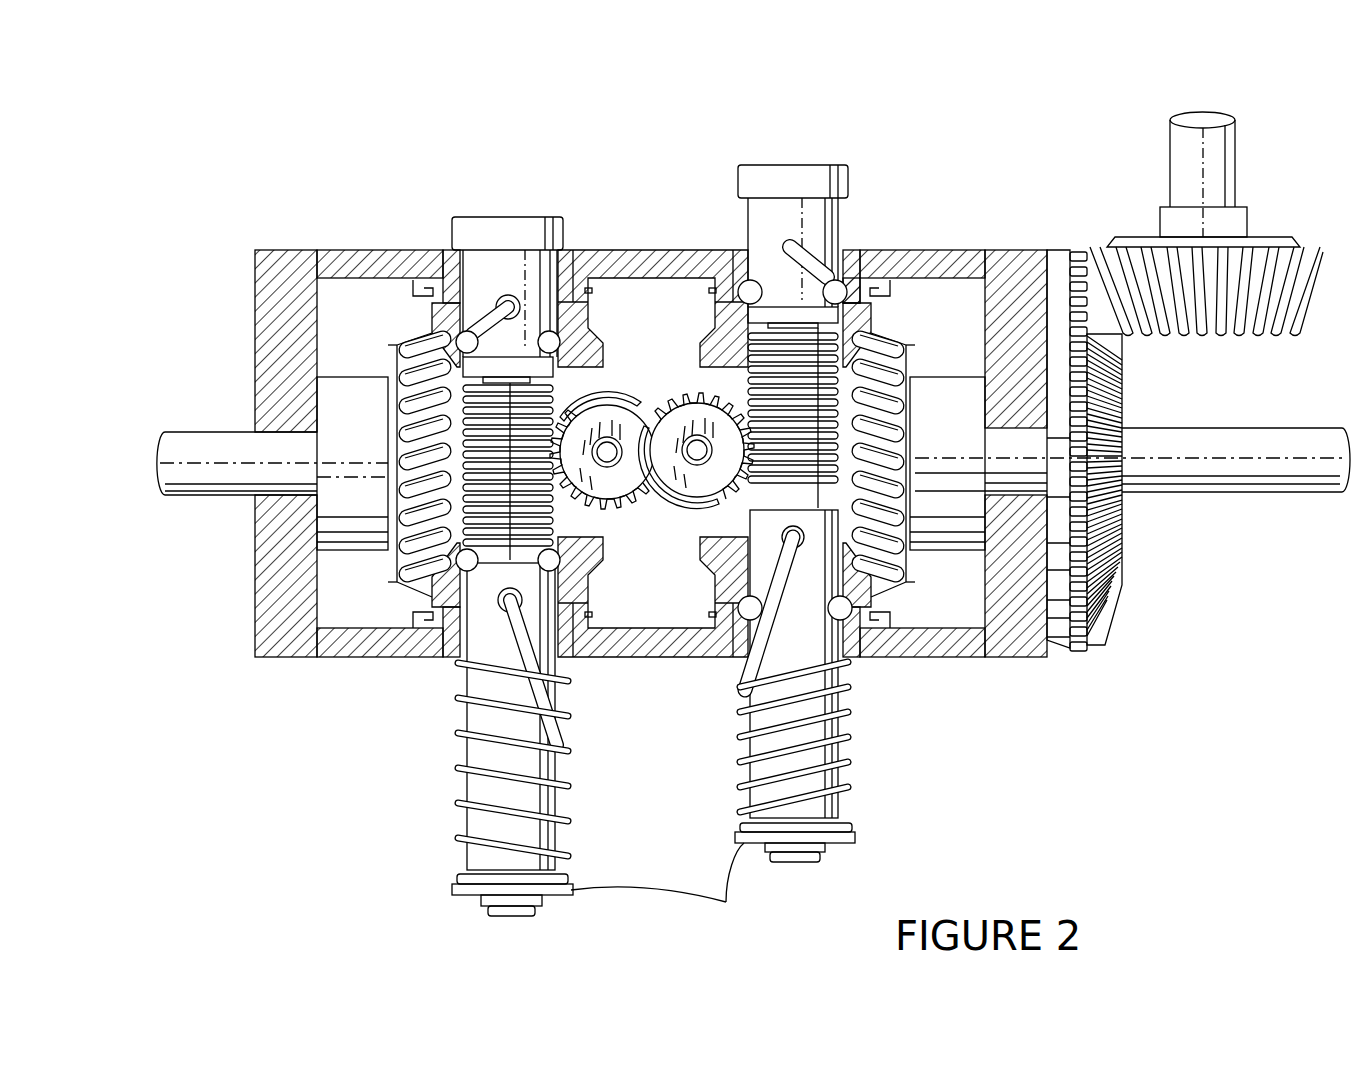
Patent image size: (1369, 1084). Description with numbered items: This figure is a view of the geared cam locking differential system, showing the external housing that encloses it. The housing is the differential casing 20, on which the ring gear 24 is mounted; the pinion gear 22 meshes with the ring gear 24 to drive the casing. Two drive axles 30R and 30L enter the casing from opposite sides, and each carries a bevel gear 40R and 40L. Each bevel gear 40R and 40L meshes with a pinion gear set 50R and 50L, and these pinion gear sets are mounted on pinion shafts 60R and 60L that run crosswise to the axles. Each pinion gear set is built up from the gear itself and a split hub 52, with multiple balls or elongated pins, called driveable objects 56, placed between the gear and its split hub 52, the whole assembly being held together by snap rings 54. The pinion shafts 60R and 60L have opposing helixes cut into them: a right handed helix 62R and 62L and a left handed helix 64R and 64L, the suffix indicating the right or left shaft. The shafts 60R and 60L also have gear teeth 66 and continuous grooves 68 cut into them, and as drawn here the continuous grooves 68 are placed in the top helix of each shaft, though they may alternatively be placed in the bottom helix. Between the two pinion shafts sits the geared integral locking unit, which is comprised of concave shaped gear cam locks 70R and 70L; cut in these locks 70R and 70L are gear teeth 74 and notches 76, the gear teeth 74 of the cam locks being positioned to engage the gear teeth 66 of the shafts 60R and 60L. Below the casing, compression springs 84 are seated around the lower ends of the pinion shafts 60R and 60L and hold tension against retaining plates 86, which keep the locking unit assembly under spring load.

The differential casing 20 is at (256, 614).
The pinion gear 22 is at (1222, 160).
The ring gear 24 is at (1122, 412).
The drive axle 30L is at (208, 440).
The drive axle 30R is at (1183, 495).
The bevel gear 40L is at (347, 377).
The bevel gear 40R is at (955, 565).
The pinion gear set 50L is at (430, 330).
The pinion gear set 50R is at (872, 317).
The split hub 52 is at (428, 320).
The snap ring 54 is at (423, 293).
The driveable objects 56 is at (857, 253).
The pinion shaft 60L is at (512, 217).
The pinion shaft 60R is at (832, 167).
The right handed helix 62L is at (488, 308).
The right handed helix 62R is at (750, 680).
The left handed helix 64L is at (560, 748).
The left handed helix 64R is at (800, 243).
The gear teeth 66 is at (463, 418).
The continuous grooves 68 is at (460, 340).
The gear cam lock 70L is at (608, 398).
The gear cam lock 70R is at (655, 398).
The gear teeth 74 is at (687, 395).
The notches 76 is at (680, 500).
The compression spring 84 is at (460, 768).
The retaining plate 86 is at (667, 888).